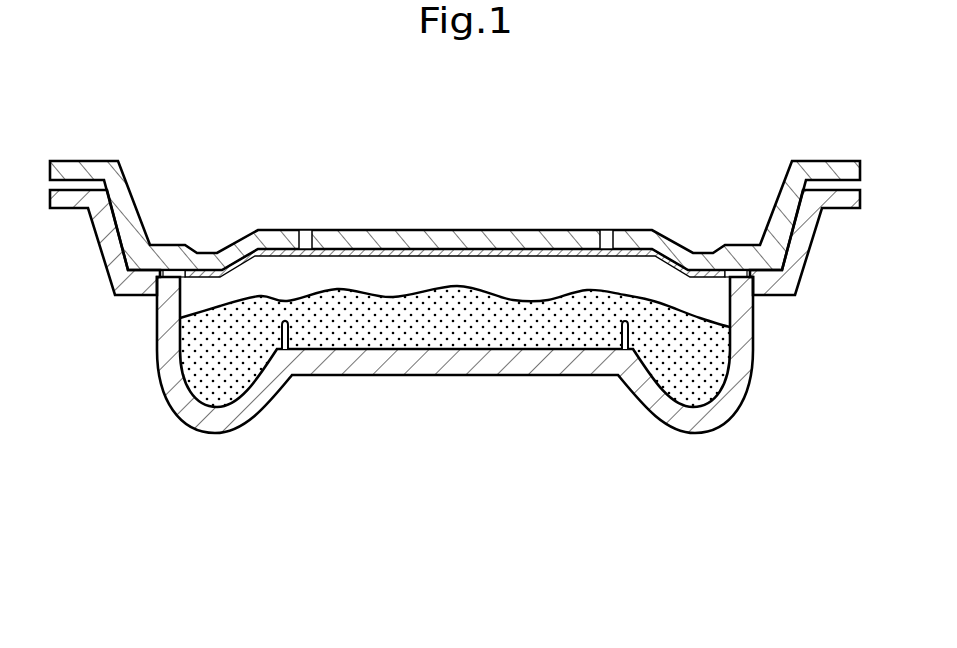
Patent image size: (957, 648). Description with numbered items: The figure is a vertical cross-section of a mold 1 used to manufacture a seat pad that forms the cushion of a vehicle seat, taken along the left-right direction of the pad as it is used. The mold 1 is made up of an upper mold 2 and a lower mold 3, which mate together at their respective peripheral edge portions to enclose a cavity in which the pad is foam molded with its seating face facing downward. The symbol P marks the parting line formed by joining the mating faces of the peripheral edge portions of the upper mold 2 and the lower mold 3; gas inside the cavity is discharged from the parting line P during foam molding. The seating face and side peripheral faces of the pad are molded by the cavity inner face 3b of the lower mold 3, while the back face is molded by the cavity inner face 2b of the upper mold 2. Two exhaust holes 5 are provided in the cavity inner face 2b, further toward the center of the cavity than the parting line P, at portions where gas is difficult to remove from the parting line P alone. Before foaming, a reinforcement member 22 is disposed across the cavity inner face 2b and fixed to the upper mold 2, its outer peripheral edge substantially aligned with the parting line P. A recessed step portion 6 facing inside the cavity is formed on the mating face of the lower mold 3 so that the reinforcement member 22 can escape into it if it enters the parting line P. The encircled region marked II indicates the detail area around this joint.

The mold 1 is at (665, 143).
The upper mold 2 is at (430, 230).
The cavity inner face of the upper mold 2b is at (520, 250).
The reinforcement member 22 is at (440, 257).
The lower mold 3 is at (400, 376).
The cavity inner face of the lower mold 3b is at (469, 349).
The exhaust holes 5 is at (305, 230).
The recessed step portion 6 is at (173, 270).
The parting line P is at (148, 277).
The detail view region II is at (133, 328).